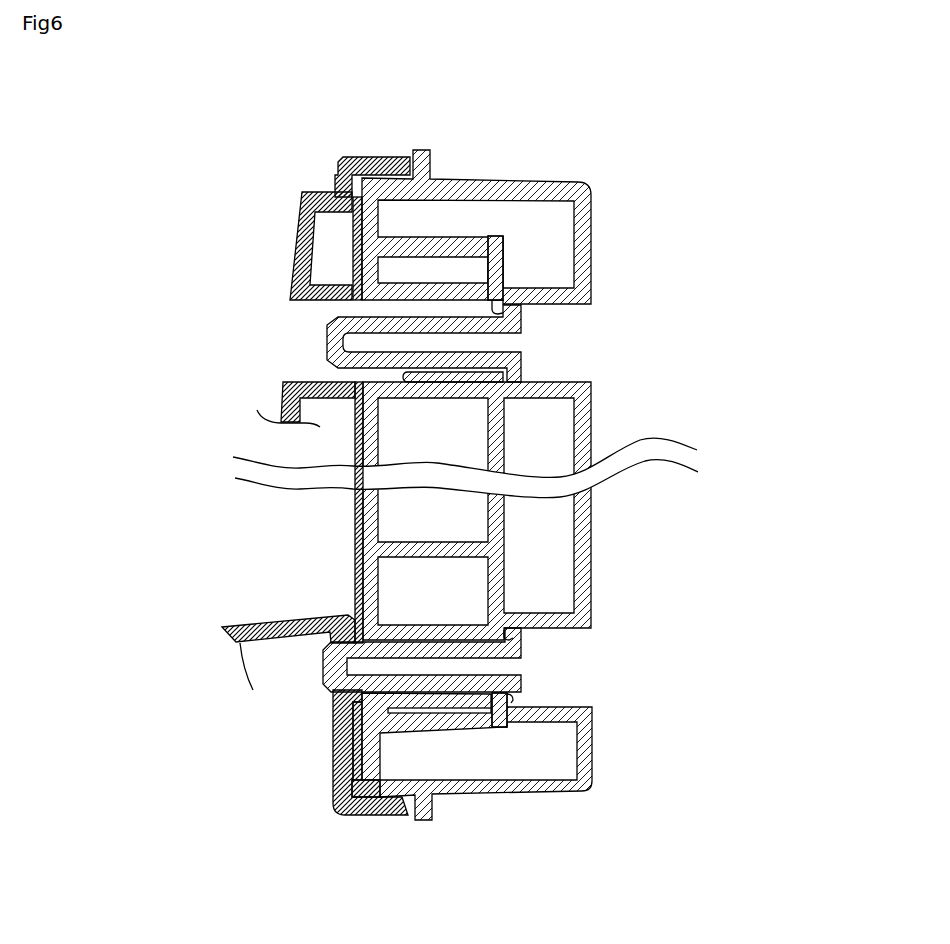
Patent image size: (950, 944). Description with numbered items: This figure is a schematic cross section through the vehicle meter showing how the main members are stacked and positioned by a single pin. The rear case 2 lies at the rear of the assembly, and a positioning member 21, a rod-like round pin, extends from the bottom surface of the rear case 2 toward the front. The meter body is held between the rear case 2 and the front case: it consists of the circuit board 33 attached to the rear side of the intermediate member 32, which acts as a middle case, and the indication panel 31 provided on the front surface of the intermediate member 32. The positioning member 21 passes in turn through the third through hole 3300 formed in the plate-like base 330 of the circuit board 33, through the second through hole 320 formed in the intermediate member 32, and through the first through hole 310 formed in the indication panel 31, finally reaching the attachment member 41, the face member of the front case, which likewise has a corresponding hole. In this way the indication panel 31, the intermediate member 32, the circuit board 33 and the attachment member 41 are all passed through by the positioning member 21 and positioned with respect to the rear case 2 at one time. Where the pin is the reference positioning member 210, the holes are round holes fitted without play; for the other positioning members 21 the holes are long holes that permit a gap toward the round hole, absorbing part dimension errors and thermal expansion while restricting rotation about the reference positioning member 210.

The rear case 2 is at (593, 565).
The positioning member 21 is at (338, 524).
The reference positioning member 210 is at (338, 705).
The indication panel 31 is at (353, 517).
The intermediate member 32 is at (338, 168).
The circuit board 33 is at (493, 230).
The first through hole 310 is at (360, 375).
The second through hole 320 is at (410, 373).
The base 330 is at (503, 243).
The third through hole 3300 is at (503, 308).
The attachment member 41 is at (300, 223).